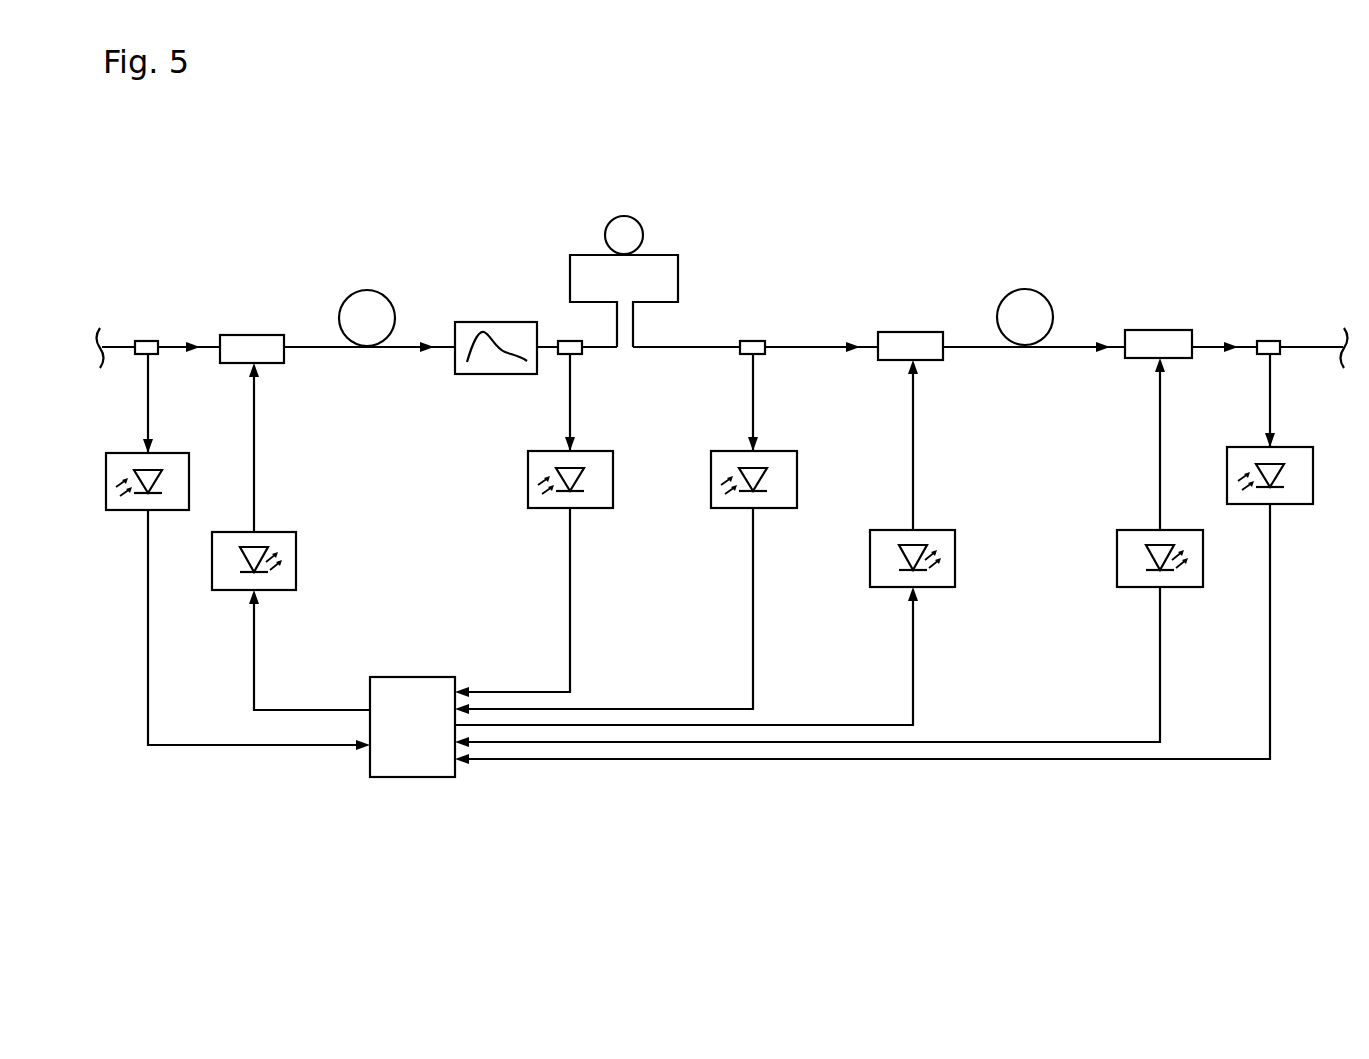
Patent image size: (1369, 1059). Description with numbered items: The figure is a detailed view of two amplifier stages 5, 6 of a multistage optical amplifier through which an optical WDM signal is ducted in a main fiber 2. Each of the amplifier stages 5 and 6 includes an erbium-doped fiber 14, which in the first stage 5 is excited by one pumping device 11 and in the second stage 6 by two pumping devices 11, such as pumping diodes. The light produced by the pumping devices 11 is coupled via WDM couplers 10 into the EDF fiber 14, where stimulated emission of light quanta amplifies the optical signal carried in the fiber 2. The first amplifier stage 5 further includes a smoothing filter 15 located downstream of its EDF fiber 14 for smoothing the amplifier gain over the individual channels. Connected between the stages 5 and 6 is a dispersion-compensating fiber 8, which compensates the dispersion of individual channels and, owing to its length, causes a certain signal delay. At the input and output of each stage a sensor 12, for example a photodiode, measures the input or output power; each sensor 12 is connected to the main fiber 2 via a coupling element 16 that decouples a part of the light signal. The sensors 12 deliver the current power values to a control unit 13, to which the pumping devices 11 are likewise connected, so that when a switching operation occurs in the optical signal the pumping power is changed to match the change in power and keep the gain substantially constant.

The fiber 2 is at (118, 347).
The first amplifier stage 5 is at (388, 236).
The second amplifier stage 6 is at (790, 236).
The dispersion-compensating fiber 8 is at (612, 216).
The WDM coupler 10 is at (268, 363).
The pumping device 11 is at (296, 552).
The sensor 12 is at (106, 470).
The control unit 13 is at (427, 677).
The erbium-doped fiber 14 is at (387, 298).
The smoothing filter 15 is at (505, 322).
The coupling element 16 is at (158, 341).